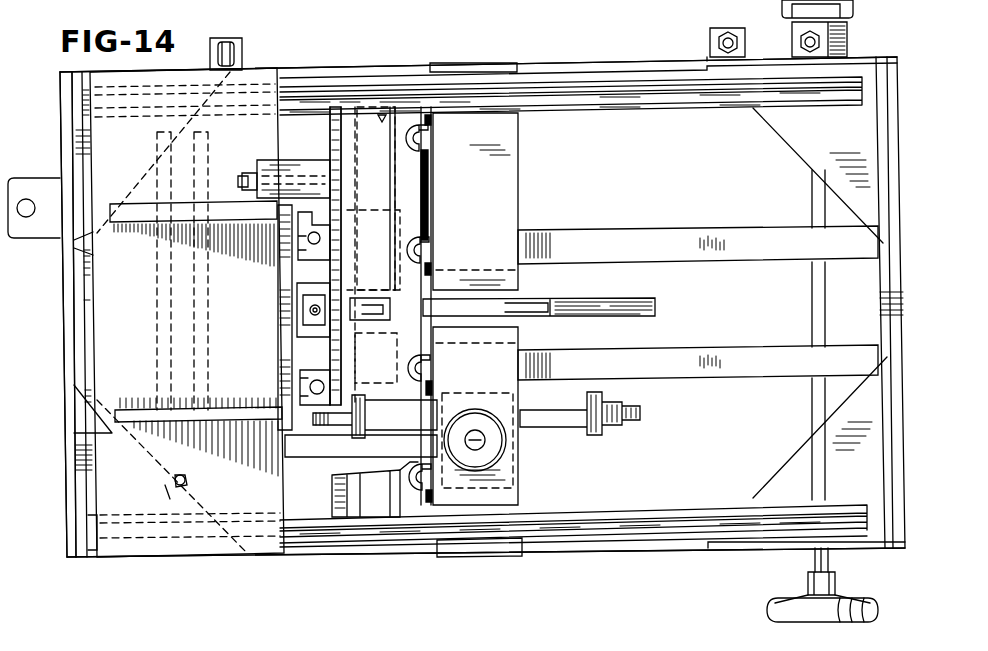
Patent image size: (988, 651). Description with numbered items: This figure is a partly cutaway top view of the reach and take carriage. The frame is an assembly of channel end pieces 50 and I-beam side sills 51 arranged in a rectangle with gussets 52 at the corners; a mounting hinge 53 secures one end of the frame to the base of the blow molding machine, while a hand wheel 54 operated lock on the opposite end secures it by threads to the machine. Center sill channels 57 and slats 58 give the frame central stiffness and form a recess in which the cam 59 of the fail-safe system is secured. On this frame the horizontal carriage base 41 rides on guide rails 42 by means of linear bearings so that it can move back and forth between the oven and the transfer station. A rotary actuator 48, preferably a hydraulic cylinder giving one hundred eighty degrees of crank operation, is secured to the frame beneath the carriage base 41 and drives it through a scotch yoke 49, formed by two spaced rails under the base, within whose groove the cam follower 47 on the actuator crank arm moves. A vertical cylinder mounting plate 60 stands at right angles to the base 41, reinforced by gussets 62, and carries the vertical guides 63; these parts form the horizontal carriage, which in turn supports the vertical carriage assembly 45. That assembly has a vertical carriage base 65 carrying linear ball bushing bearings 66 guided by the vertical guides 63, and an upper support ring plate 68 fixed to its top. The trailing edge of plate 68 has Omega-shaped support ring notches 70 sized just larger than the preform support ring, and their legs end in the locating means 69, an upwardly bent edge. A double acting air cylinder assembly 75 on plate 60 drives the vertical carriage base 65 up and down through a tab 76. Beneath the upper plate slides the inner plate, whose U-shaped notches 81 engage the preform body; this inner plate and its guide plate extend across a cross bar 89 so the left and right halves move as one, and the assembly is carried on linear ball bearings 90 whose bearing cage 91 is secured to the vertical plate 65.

The horizontal carriage base 41 is at (95, 322).
The guide rails 42 is at (570, 88).
The vertical carriage assembly 45 is at (333, 95).
The cam follower 47 is at (175, 488).
The rotary actuator 48 is at (578, 428).
The scotch yoke 49 is at (326, 452).
The channel end pieces 50 is at (883, 278).
The I-beam side sills 51 is at (645, 66).
The gussets 52 is at (778, 127).
The mounting hinge 53 is at (40, 240).
The hand wheel 54 is at (780, 600).
The center sill channels 57 is at (765, 255).
The slats 58 is at (510, 140).
The cam 59 is at (564, 300).
The vertical cylinder mounting plate 60 is at (283, 308).
The gussets 62 is at (137, 204).
The vertical guides 63 is at (320, 238).
The vertical carriage base 65 is at (348, 110).
The linear ball bushing bearings 66 is at (316, 224).
The upper support ring plate 68 is at (410, 110).
The locating means 69 is at (430, 165).
The support ring notches 70 is at (426, 138).
The air cylinder assembly 75 is at (280, 340).
The tab 76 is at (330, 284).
The U-shaped notches 81 is at (430, 246).
The cross bar 89 is at (373, 100).
The linear ball bearings 90 is at (250, 153).
The bearing cage 91 is at (268, 160).